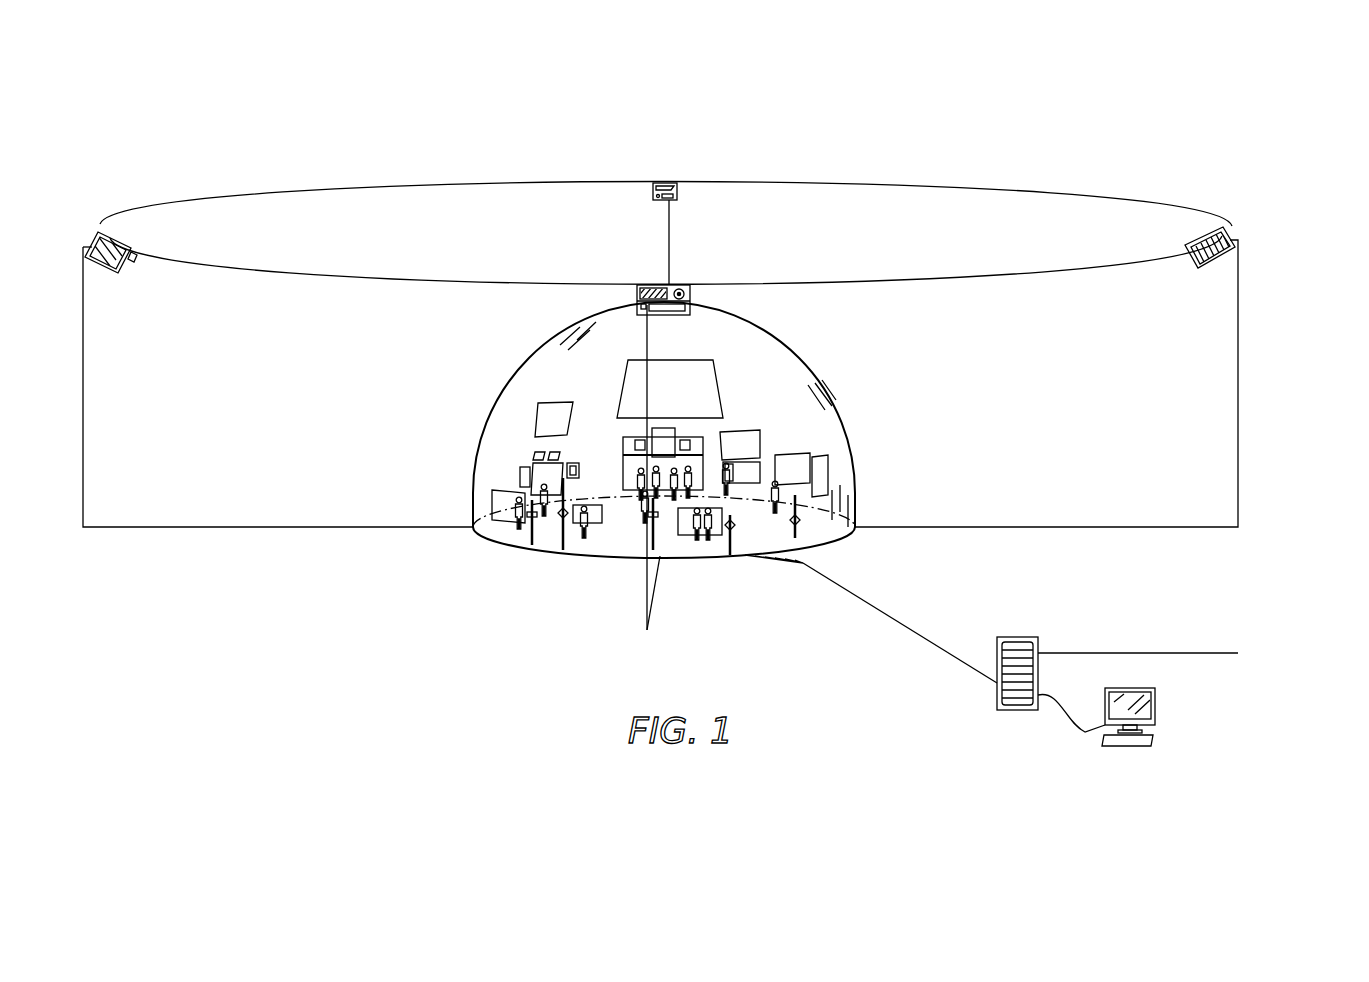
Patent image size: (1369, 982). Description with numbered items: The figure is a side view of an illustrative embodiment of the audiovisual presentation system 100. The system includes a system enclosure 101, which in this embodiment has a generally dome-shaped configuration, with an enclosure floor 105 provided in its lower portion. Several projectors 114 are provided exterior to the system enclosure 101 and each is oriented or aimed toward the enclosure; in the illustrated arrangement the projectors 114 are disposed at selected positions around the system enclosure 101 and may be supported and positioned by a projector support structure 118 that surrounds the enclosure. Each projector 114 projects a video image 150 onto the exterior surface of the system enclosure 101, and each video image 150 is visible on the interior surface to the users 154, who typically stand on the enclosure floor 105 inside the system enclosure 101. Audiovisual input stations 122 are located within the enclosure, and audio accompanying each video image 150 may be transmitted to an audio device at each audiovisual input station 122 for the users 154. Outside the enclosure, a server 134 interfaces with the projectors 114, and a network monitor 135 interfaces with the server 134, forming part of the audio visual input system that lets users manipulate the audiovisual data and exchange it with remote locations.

The audiovisual presentation system 100 is at (240, 130).
The system enclosure 101 is at (853, 413).
The enclosure floor 105 is at (830, 524).
The projector 114 is at (124, 275).
The projector support structure 118 is at (1238, 345).
The audiovisual input station 122 is at (540, 549).
The server 134 is at (1017, 712).
The network monitor 135 is at (1144, 746).
The video image 150 is at (557, 398).
The user 154 is at (697, 543).